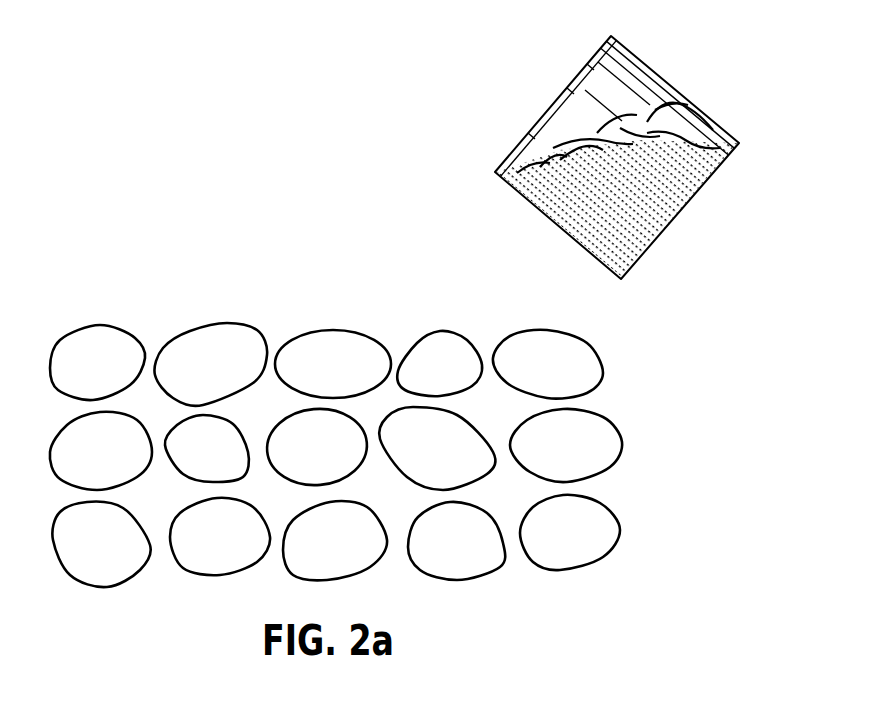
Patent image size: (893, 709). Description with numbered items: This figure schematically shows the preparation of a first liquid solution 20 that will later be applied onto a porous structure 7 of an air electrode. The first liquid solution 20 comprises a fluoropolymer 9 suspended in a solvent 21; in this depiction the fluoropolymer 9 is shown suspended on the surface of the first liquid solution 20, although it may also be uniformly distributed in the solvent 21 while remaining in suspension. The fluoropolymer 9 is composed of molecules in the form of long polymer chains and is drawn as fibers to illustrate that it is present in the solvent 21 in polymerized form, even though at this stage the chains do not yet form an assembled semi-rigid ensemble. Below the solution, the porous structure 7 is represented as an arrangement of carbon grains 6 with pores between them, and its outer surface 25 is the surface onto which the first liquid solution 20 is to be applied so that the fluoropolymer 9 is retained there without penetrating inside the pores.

The carbon grains 6 is at (605, 442).
The porous structure 7 is at (374, 451).
The fluoropolymer 9 is at (654, 97).
The first liquid solution 20 is at (620, 167).
The solvent 21 is at (638, 228).
The outer surface 25 is at (560, 321).